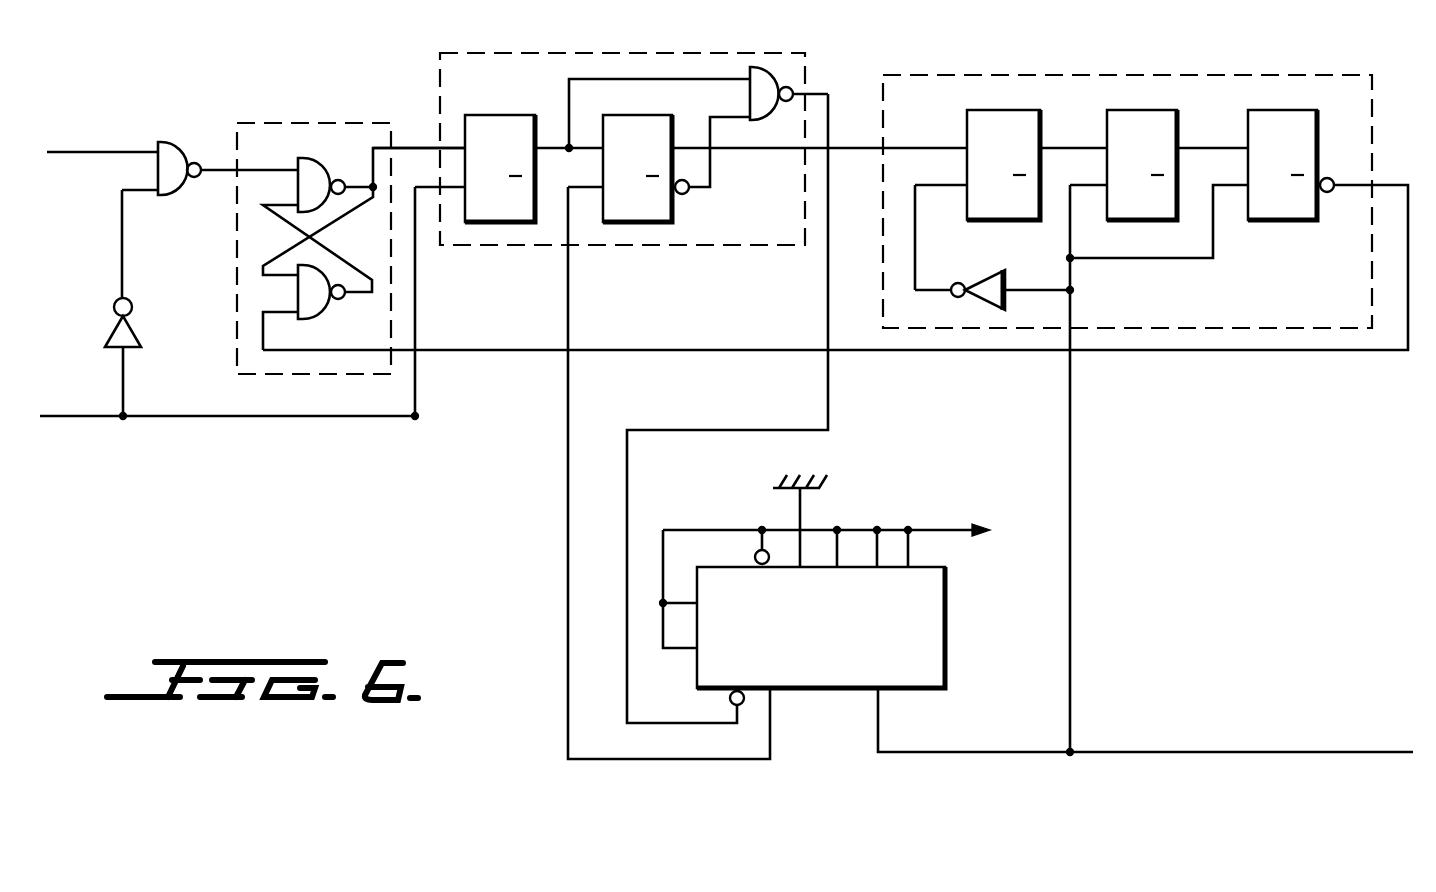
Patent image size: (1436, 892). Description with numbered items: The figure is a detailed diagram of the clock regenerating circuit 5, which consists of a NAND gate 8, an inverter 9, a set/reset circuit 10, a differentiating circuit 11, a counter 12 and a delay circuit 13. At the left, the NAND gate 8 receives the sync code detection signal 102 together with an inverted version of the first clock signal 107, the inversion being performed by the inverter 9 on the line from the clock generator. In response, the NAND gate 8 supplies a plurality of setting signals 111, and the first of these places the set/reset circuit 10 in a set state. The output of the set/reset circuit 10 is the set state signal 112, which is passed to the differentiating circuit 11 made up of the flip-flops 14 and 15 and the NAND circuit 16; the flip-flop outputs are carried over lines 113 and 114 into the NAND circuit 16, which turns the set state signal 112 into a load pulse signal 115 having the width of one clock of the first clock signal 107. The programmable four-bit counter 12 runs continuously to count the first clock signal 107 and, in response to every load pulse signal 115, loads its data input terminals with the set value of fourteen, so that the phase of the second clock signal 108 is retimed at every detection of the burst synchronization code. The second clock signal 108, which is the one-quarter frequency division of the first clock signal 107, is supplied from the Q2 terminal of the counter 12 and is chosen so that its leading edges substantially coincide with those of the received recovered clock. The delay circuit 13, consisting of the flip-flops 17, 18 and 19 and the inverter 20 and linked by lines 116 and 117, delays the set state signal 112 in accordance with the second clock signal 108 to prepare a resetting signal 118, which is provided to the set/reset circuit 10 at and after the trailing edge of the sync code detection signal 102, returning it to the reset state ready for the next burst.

The clock regenerating circuit 5 is at (296, 507).
The NAND gate 8 is at (174, 196).
The inverter 9 is at (140, 329).
The set/reset circuit 10 is at (321, 99).
The differentiating circuit 11 is at (574, 40).
The counter 12 is at (948, 651).
The delay circuit 13 is at (1102, 75).
The flip-flop 14 is at (483, 115).
The flip-flop 15 is at (672, 207).
The NAND circuit 16 is at (757, 119).
The flip-flop 17 is at (967, 121).
The flip-flop 18 is at (1163, 110).
The flip-flop 19 is at (1318, 128).
The inverter 20 is at (999, 272).
The sync code detection signal 102 is at (118, 118).
The first clock signal 107 is at (72, 420).
The second clock signal 108 is at (1215, 738).
The setting signals 111 is at (211, 158).
The set state signal 112 is at (413, 140).
The signal line 113 is at (648, 68).
The signal line 114 is at (720, 102).
The load pulse signal 115 is at (670, 418).
The signal line 116 is at (1086, 110).
The signal line 117 is at (1236, 110).
The resetting signal 118 is at (1195, 356).